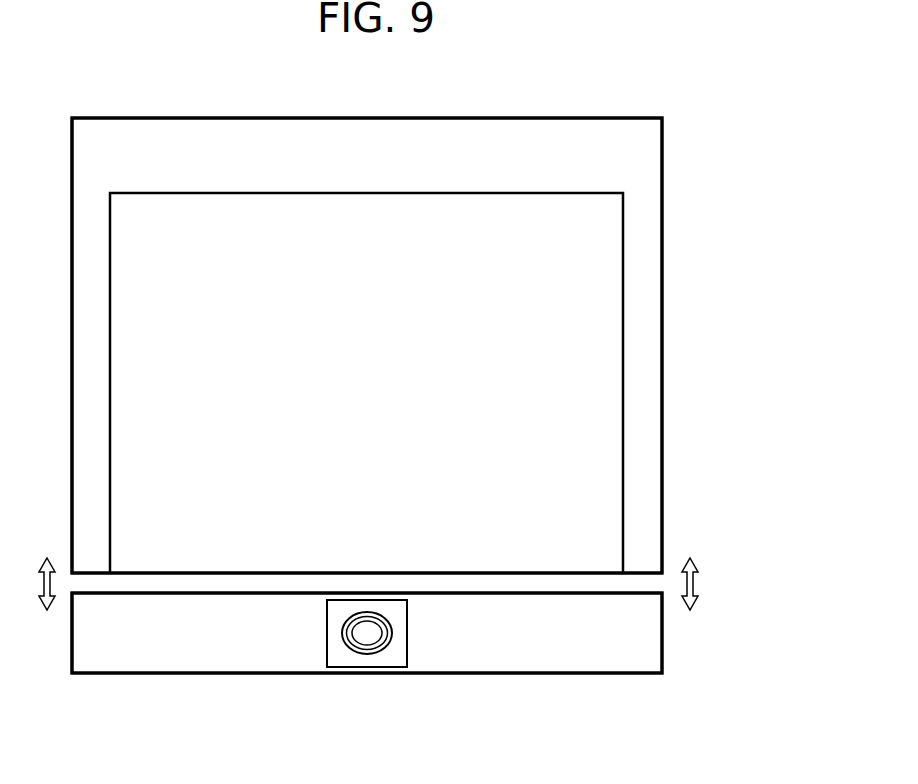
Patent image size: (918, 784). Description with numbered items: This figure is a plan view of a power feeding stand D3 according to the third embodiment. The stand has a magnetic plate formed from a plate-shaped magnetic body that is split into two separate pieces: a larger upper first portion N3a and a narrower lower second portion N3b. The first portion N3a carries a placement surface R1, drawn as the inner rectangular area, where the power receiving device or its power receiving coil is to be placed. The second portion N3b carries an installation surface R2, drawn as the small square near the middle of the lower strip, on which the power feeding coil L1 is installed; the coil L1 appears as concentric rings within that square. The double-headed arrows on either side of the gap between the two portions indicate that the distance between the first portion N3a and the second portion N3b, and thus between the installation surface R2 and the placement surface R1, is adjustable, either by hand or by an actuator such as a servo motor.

The power feeding stand D3 is at (687, 124).
The first portion N3a is at (662, 291).
The second portion N3b is at (663, 638).
The placement surface R1 is at (624, 389).
The installation surface R2 is at (325, 643).
The power feeding coil L1 is at (386, 646).